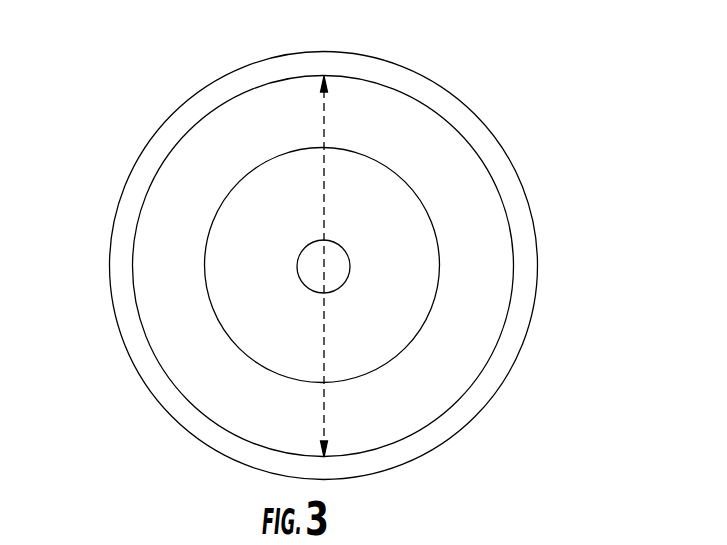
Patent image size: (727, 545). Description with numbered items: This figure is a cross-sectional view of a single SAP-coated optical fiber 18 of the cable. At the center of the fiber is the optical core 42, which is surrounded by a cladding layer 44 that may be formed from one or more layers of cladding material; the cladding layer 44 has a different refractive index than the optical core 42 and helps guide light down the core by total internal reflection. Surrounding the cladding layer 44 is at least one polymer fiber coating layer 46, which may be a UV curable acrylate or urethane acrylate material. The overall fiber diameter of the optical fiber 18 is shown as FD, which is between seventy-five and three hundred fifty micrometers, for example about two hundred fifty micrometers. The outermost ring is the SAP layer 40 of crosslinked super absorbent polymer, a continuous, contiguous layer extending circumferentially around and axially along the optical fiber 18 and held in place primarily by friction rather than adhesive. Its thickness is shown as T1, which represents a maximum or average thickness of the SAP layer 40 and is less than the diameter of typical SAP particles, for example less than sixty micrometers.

The optical fiber 18 is at (332, 277).
The SAP layer 40 is at (135, 330).
The optical core 42 is at (337, 272).
The cladding layer 44 is at (420, 277).
The polymer fiber coating layer 46 is at (490, 263).
The thickness of SAP layer T1 is at (176, 92).
The fiber diameter FD is at (332, 423).